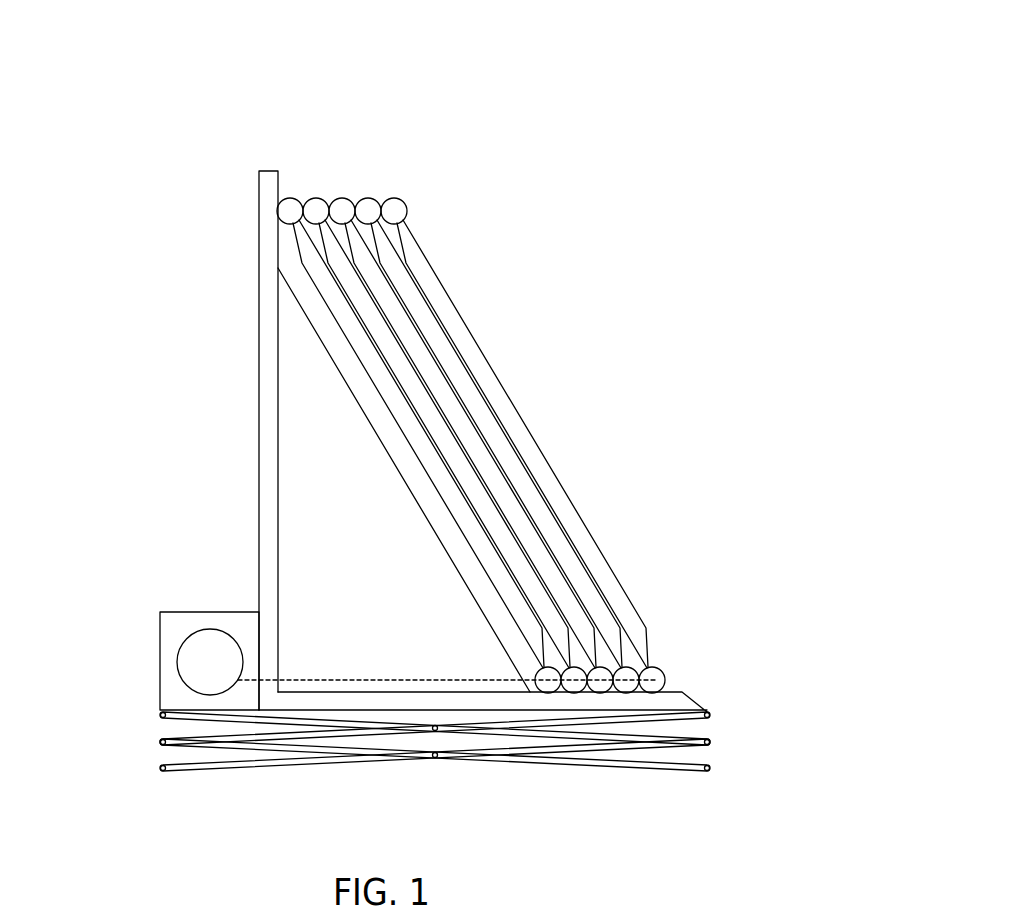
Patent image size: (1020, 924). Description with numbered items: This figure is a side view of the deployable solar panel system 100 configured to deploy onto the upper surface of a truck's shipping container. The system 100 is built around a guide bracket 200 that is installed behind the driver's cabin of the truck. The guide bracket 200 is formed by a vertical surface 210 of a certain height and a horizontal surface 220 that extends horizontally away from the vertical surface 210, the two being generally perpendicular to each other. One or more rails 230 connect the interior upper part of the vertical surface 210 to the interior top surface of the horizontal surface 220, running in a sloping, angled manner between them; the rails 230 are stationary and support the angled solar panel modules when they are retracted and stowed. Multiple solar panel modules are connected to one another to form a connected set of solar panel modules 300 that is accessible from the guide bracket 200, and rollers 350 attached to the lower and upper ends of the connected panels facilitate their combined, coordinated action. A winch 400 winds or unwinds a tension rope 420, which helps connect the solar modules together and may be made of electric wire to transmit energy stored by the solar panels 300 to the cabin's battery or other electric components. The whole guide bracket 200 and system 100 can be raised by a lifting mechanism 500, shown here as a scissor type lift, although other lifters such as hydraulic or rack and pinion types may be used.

The deployable solar panel system 100 is at (538, 90).
The guide bracket 200 is at (245, 267).
The vertical surface 210 is at (268, 171).
The horizontal surface 220 is at (702, 698).
The rails 230 is at (385, 443).
The connected set of solar panel modules 300 is at (523, 427).
The rollers 350 is at (408, 211).
The winch 400 is at (177, 662).
The tension rope 420 is at (394, 677).
The lifting mechanism 500 is at (246, 778).